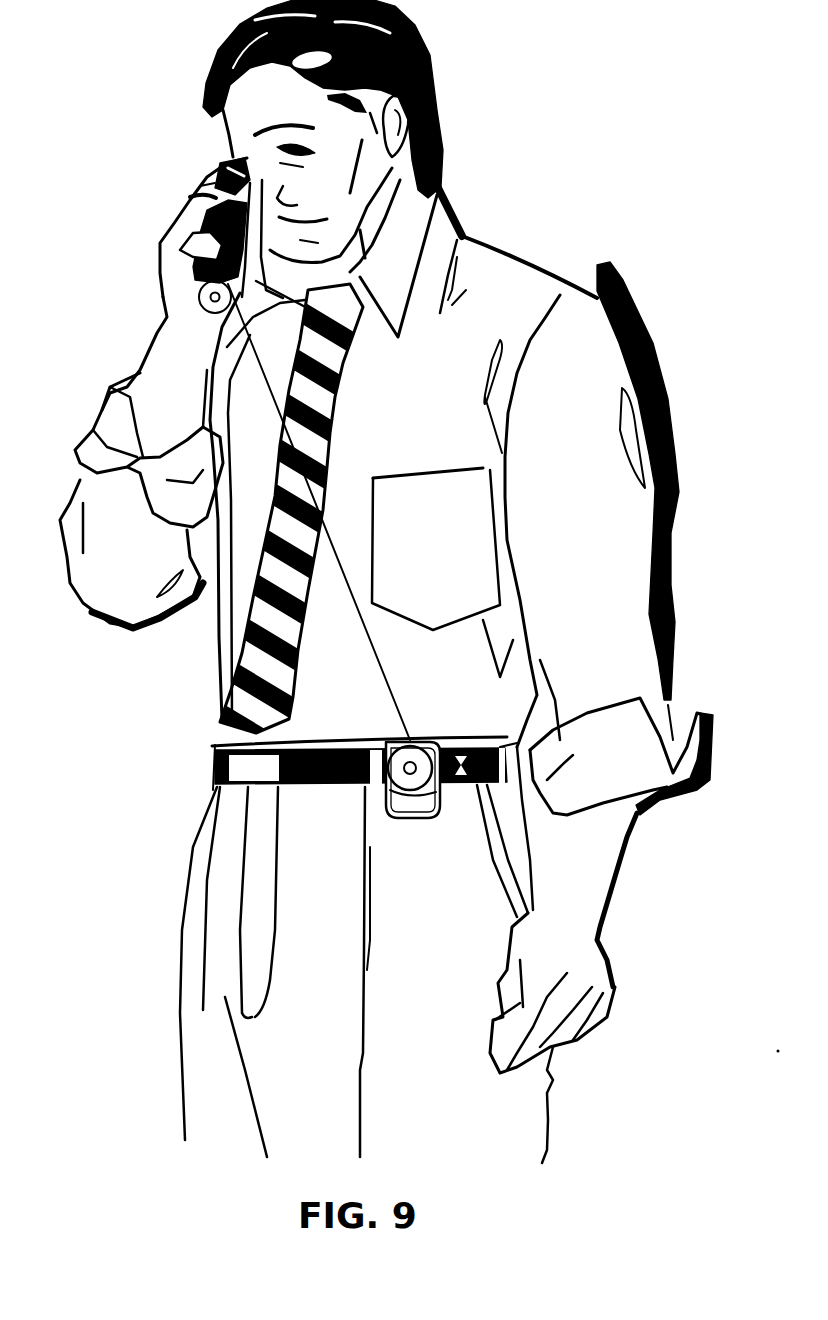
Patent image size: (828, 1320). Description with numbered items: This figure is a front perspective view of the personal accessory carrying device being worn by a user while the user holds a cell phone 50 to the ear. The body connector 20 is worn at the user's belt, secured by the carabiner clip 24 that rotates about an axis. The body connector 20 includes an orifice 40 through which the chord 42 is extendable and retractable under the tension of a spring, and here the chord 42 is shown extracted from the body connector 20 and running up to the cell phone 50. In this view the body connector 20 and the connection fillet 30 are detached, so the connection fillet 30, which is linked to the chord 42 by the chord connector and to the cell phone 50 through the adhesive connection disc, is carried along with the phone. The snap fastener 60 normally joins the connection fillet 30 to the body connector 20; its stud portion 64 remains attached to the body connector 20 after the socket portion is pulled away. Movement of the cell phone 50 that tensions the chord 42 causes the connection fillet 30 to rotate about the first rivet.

The body connector 20 is at (405, 808).
The carabiner clip 24 is at (415, 832).
The connection fillet 30 is at (201, 283).
The orifice 40 is at (414, 736).
The chord 42 is at (386, 677).
The cell phone 50 is at (207, 200).
The snap fastener 60 is at (208, 300).
The stud portion 64 is at (414, 765).